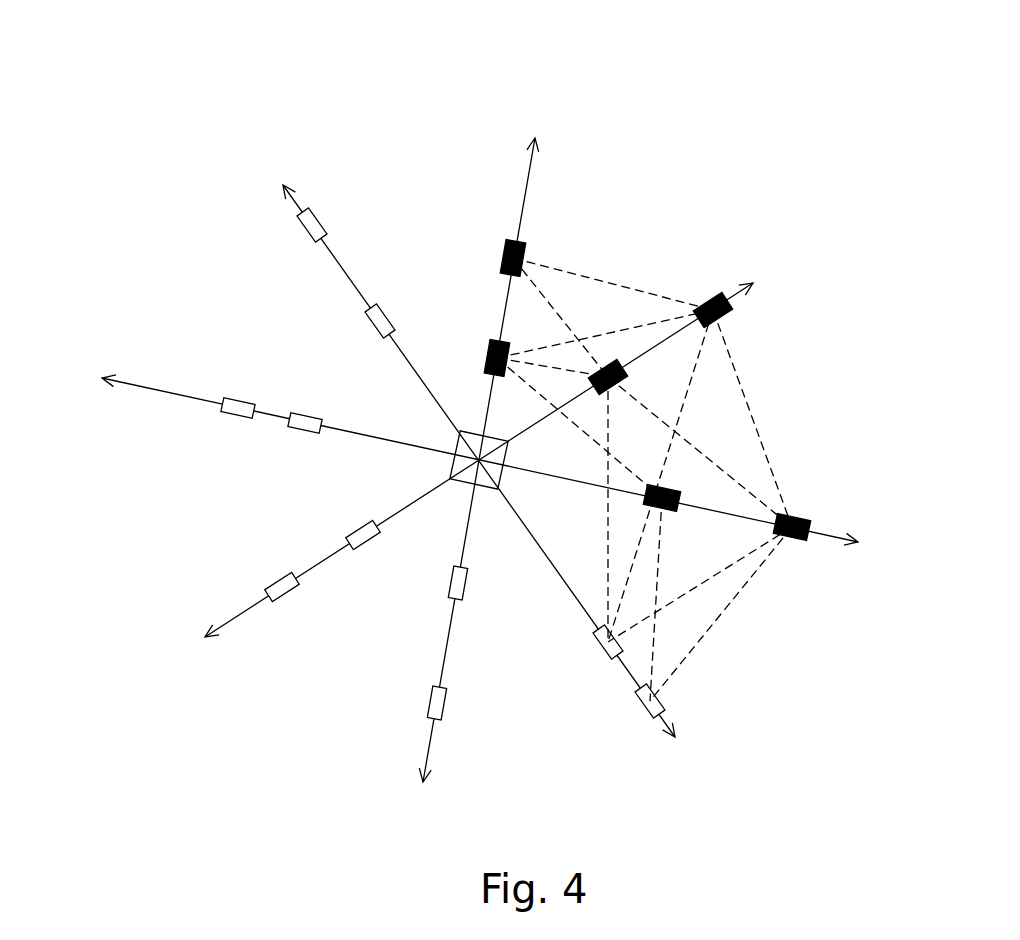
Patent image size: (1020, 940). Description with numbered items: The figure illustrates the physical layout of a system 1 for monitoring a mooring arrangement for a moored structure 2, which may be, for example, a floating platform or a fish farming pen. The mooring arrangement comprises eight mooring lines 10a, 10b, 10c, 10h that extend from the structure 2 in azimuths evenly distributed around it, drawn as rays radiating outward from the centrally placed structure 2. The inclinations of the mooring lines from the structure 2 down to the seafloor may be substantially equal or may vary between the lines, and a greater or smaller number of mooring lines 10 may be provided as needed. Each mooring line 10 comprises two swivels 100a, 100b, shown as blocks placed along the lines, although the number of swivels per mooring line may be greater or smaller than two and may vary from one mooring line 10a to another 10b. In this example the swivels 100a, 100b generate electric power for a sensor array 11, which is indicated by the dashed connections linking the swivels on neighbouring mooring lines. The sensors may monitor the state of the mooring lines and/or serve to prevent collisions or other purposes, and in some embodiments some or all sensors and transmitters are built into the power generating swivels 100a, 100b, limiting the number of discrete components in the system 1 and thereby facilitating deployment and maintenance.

The system 1 is at (501, 400).
The moored structure 2 is at (480, 481).
The mooring line 10 is at (330, 252).
The mooring line 10a is at (501, 465).
The mooring line 10b is at (496, 453).
The mooring line 10c is at (484, 449).
The mooring line 10h is at (497, 478).
The sensor array 11 is at (747, 397).
The swivel 100a is at (674, 507).
The swivel 100b is at (802, 536).